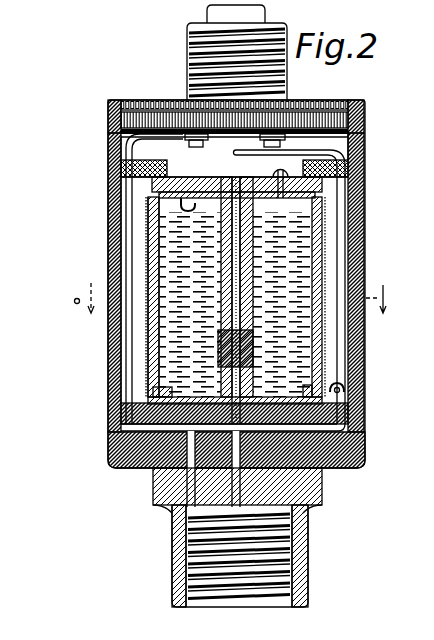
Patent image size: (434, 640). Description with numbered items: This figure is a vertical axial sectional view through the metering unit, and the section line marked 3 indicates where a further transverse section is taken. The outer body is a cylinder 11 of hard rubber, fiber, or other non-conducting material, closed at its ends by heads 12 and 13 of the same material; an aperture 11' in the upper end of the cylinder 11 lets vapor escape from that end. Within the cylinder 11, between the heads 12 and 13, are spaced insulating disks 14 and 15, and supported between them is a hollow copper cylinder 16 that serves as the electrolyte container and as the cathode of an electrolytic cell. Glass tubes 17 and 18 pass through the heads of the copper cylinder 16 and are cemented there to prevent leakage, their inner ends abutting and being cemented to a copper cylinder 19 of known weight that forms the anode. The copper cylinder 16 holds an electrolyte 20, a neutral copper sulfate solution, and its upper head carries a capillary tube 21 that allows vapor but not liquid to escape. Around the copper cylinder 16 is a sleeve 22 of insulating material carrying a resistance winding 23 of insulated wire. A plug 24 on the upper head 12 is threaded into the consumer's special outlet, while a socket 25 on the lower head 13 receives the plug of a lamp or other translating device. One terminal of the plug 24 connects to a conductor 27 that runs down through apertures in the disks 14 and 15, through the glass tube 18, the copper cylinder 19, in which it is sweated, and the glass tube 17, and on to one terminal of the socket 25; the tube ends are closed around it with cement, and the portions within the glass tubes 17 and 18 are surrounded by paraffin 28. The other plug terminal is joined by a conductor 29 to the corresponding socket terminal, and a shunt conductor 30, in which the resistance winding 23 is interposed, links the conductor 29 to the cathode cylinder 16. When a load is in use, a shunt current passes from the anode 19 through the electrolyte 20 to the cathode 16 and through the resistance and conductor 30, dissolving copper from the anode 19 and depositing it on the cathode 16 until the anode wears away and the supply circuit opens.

The cylinder 11 is at (251, 300).
The aperture 11' is at (377, 146).
The head 12 is at (120, 101).
The head 13 is at (135, 469).
The disk 14 is at (108, 145).
The disk 15 is at (130, 426).
The copper cylinder 16 is at (150, 310).
The glass tube 17 is at (252, 199).
The glass tube 18 is at (148, 378).
The copper cylinder 19 is at (253, 345).
The electrolyte 20 is at (176, 257).
The capillary tube 21 is at (220, 200).
The sleeve 22 is at (148, 340).
The resistance winding 23 is at (158, 233).
The plug 24 is at (215, 22).
The socket 25 is at (168, 508).
The conductor 27 is at (108, 130).
The paraffin 28 is at (250, 278).
The conductor 29 is at (342, 142).
The conductor 30 is at (345, 384).
The section line 3- 3 is at (227, 298).